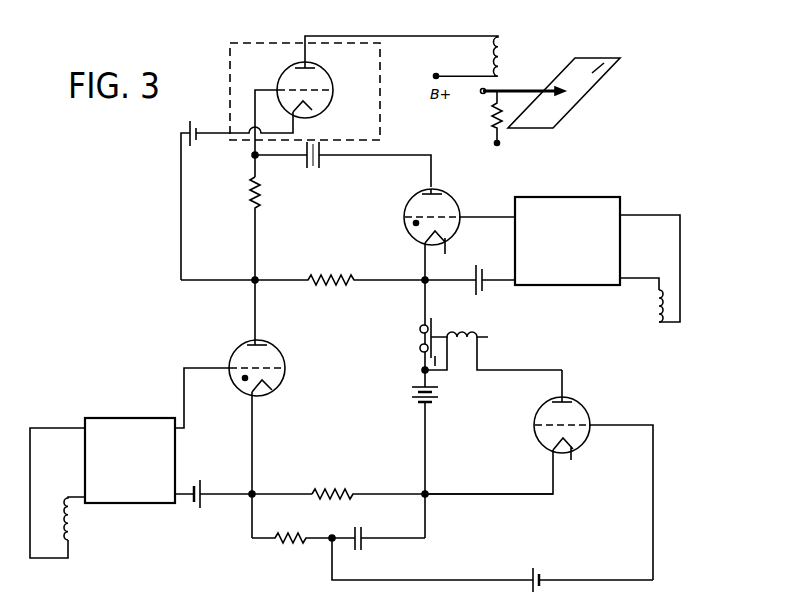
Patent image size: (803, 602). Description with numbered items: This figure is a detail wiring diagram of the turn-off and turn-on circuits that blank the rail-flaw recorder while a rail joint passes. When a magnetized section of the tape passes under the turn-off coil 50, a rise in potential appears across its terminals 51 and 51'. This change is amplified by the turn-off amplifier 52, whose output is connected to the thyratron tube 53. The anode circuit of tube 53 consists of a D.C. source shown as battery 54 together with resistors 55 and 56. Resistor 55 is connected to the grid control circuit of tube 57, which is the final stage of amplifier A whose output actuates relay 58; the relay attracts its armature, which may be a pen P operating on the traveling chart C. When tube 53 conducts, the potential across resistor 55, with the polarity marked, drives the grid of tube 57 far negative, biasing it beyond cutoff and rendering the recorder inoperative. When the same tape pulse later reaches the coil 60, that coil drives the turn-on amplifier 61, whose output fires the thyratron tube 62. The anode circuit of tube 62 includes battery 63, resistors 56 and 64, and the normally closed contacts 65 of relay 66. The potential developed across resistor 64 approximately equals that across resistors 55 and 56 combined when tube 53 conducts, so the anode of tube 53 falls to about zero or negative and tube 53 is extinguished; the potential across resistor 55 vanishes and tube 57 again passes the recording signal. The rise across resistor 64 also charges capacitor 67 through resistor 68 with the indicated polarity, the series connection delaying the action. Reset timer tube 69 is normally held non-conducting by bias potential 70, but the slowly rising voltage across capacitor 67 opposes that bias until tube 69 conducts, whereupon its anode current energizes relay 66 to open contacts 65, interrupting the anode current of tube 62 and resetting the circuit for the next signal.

The amplifier A is at (258, 43).
The pen P is at (526, 90).
The chart C is at (600, 70).
The turn-off coil 50 is at (665, 298).
The terminal 51 is at (639, 275).
The terminal 51' is at (650, 259).
The amplifier 52 is at (567, 241).
The thyratron tube 53 is at (448, 198).
The battery 54 is at (319, 150).
The resistor 55 is at (265, 192).
The resistor 56 is at (324, 276).
The tube 57 is at (324, 80).
The relay 58 is at (505, 50).
The coil 60 is at (70, 546).
The amplifier 61 is at (130, 460).
The thyratron tube 62 is at (282, 381).
The battery 63 is at (437, 392).
The resistor 64 is at (330, 490).
The contacts 65 is at (419, 348).
The relay 66 is at (462, 330).
The capacitor 67 is at (350, 553).
The resistor 68 is at (300, 546).
The reset timer tube 69 is at (579, 404).
The bias potential 70 is at (538, 570).